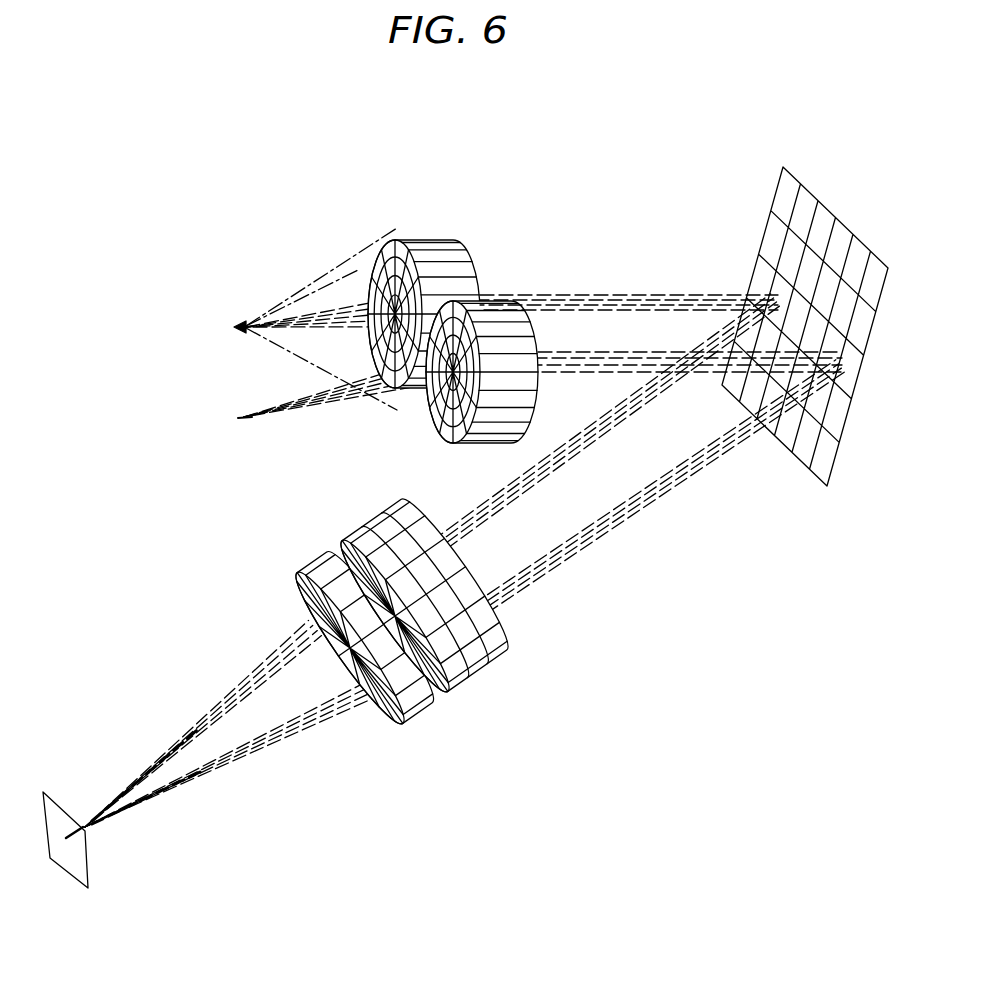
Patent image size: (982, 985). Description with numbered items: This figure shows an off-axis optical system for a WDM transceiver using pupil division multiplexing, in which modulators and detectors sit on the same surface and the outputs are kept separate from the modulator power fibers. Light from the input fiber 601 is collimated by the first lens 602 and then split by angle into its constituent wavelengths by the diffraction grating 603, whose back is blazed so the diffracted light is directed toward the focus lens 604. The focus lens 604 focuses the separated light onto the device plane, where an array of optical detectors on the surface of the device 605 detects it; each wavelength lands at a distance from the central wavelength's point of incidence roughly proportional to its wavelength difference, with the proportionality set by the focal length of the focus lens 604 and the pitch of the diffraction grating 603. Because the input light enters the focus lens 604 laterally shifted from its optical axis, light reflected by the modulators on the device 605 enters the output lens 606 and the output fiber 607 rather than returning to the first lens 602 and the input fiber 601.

The input fiber 601 is at (131, 308).
The first lens 602 is at (460, 243).
The diffraction grating 603 is at (768, 218).
The focus lens 604 is at (427, 706).
The device 605 is at (45, 806).
The output lens 606 is at (430, 428).
The output fiber 607 is at (148, 432).